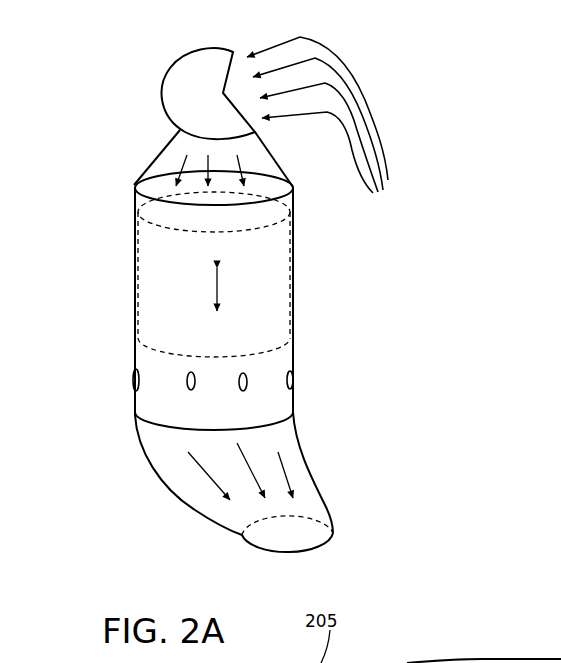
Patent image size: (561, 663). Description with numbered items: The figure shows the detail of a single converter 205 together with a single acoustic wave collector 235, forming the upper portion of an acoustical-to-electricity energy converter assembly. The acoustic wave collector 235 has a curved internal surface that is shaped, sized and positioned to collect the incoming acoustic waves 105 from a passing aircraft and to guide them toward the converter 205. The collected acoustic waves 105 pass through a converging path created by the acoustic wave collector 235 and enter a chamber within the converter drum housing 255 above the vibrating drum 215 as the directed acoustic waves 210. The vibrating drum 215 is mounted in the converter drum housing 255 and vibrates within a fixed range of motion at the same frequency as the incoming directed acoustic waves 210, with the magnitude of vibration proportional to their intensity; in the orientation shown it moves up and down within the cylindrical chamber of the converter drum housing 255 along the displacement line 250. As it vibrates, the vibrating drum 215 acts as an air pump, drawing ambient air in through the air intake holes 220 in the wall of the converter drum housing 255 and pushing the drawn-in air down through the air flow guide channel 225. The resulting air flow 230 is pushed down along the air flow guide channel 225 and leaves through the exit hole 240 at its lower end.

The acoustic waves 105 is at (330, 120).
The converter 205 is at (325, 272).
The directed acoustic waves 210 is at (182, 167).
The vibrating drum 215 is at (158, 267).
The air intake holes 220 is at (185, 382).
The air flow guide channel 225 is at (145, 463).
The air flow 230 is at (207, 478).
The acoustic wave collector 235 is at (160, 92).
The exit hole 240 is at (277, 535).
The displacement line 250 is at (213, 293).
The converter drum housing 255 is at (155, 402).